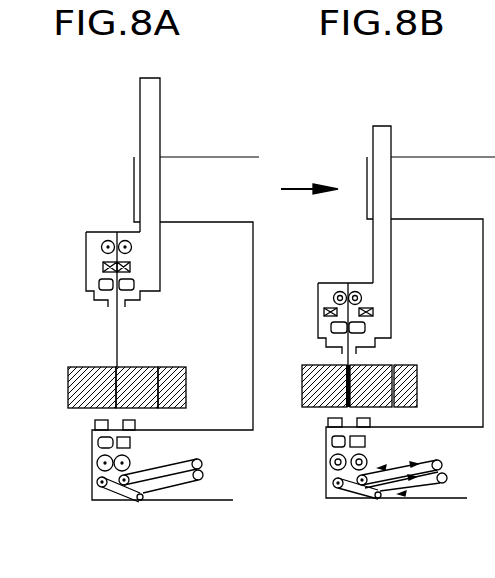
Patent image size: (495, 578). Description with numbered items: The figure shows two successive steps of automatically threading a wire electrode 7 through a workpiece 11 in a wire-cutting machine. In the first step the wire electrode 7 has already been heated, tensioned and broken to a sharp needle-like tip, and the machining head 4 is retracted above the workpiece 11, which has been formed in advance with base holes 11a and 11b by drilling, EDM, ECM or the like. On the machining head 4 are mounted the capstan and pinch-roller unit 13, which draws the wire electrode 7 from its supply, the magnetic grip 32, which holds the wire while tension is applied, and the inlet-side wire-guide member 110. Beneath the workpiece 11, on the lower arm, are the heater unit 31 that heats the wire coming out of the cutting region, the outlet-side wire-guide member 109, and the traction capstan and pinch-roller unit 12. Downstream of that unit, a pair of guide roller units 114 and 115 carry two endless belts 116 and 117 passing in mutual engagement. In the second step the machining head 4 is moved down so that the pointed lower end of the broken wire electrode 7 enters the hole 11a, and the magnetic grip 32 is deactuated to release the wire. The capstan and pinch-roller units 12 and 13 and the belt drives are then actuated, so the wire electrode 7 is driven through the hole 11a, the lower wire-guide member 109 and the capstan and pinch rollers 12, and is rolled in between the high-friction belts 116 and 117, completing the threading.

In FIG. 8A, the machining head 4 is at (160, 259).
In FIG. 8B, the machining head 4 is at (392, 263).
In FIG. 8A, the wire electrode 7 is at (118, 324).
In FIG. 8B, the wire electrode 7 is at (346, 363).
In FIG. 8A, the workpiece 11 is at (110, 365).
In FIG. 8B, the workpiece 11 is at (359, 361).
In FIG. 8A, the base hole 11a is at (116, 364).
In FIG. 8B, the base hole 11a is at (355, 362).
In FIG. 8A, the base hole 11b is at (158, 365).
In FIG. 8B, the base hole 11b is at (398, 364).
In FIG. 8A, the capstan and pinch-roller unit 12 is at (95, 463).
In FIG. 8B, the capstan and pinch-roller unit 12 is at (333, 462).
In FIG. 8A, the capstan and pinch-roller unit 13 is at (104, 243).
In FIG. 8B, the capstan and pinch-roller unit 13 is at (336, 295).
In FIG. 8A, the heater unit 31 is at (135, 424).
In FIG. 8B, the heater unit 31 is at (371, 423).
In FIG. 8A, the magnetic grip 32 is at (104, 266).
In FIG. 8B, the magnetic grip 32 is at (323, 311).
In FIG. 8A, the wire-guide member 109 is at (98, 441).
In FIG. 8B, the wire-guide member 109 is at (332, 440).
In FIG. 8A, the wire-guide member 110 is at (99, 284).
In FIG. 8B, the wire-guide member 110 is at (330, 327).
In FIG. 8A, the guide roller unit 114 is at (118, 500).
In FIG. 8B, the guide roller unit 114 is at (357, 500).
In FIG. 8A, the guide roller unit 115 is at (200, 481).
In FIG. 8B, the guide roller unit 115 is at (442, 483).
In FIG. 8A, the endless belt 116 is at (173, 470).
In FIG. 8B, the endless belt 116 is at (428, 455).
In FIG. 8A, the endless belt 117 is at (160, 500).
In FIG. 8B, the endless belt 117 is at (383, 498).